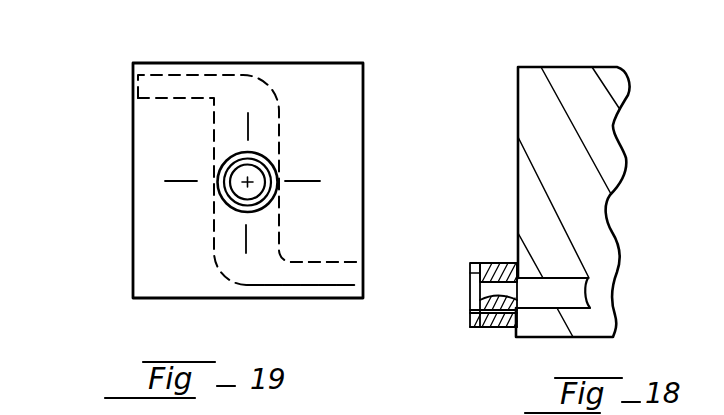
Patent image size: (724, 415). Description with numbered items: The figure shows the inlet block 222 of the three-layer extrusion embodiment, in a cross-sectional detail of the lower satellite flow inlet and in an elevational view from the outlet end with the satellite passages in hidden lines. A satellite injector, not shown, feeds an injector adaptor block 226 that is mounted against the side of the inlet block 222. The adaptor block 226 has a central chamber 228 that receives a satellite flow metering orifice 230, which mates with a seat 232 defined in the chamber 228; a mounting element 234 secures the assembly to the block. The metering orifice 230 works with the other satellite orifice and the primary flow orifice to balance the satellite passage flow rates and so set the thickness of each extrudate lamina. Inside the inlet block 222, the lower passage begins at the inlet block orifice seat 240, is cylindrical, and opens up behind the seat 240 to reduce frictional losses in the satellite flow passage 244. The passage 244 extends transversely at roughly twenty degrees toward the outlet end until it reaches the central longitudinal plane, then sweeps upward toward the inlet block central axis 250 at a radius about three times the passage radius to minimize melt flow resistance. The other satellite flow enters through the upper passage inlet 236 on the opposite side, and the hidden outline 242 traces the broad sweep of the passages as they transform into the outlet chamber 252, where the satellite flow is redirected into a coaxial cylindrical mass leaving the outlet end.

In FIG. 19, the inlet block 222 is at (380, 113).
In FIG. 18, the inlet block 222 is at (500, 153).
In FIG. 18, the injector adaptor block 226 is at (456, 287).
In FIG. 18, the central chamber 228 is at (518, 313).
In FIG. 18, the satellite flow metering orifice 230 is at (502, 263).
In FIG. 18, the seat 232 is at (486, 263).
In FIG. 18, the washer 234 is at (472, 273).
In FIG. 19, the upper passage inlet 236 is at (147, 88).
In FIG. 19, the orifice seat 240 is at (362, 263).
In FIG. 18, the orifice seat 240 is at (515, 323).
In FIG. 19, the inner dashed outline 242 is at (257, 107).
In FIG. 19, the satellite flow passage 244 is at (332, 271).
In FIG. 19, the inlet block central axis 250 is at (235, 176).
In FIG. 19, the outlet chamber 252 is at (268, 158).